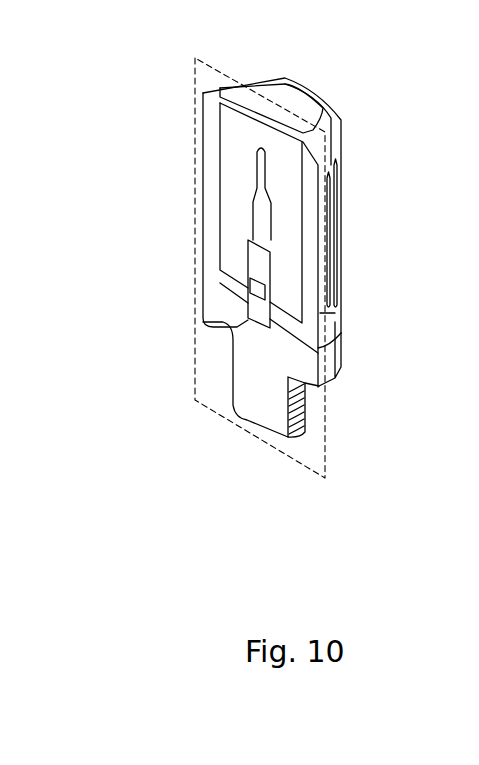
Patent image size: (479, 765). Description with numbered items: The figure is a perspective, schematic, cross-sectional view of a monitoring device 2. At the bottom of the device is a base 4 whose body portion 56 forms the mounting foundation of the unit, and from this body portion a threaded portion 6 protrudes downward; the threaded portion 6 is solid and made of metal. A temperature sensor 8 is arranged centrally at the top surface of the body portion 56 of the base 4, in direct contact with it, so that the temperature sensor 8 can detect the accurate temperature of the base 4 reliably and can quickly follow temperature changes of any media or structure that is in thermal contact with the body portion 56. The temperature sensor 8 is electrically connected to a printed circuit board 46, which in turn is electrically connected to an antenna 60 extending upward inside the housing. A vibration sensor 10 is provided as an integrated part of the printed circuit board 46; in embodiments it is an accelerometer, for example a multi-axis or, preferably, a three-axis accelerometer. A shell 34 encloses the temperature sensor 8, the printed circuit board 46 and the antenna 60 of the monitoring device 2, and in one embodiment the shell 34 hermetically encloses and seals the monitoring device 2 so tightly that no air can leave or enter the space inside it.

The monitoring device 2 is at (284, 241).
The base 4 is at (352, 345).
The threaded portion 6 is at (305, 415).
The temperature sensor 8 is at (203, 313).
The vibration sensor 10 is at (270, 275).
The shell 34 is at (343, 190).
The printed circuit board 46 is at (248, 270).
The body portion 56 is at (343, 362).
The antenna 60 is at (252, 207).